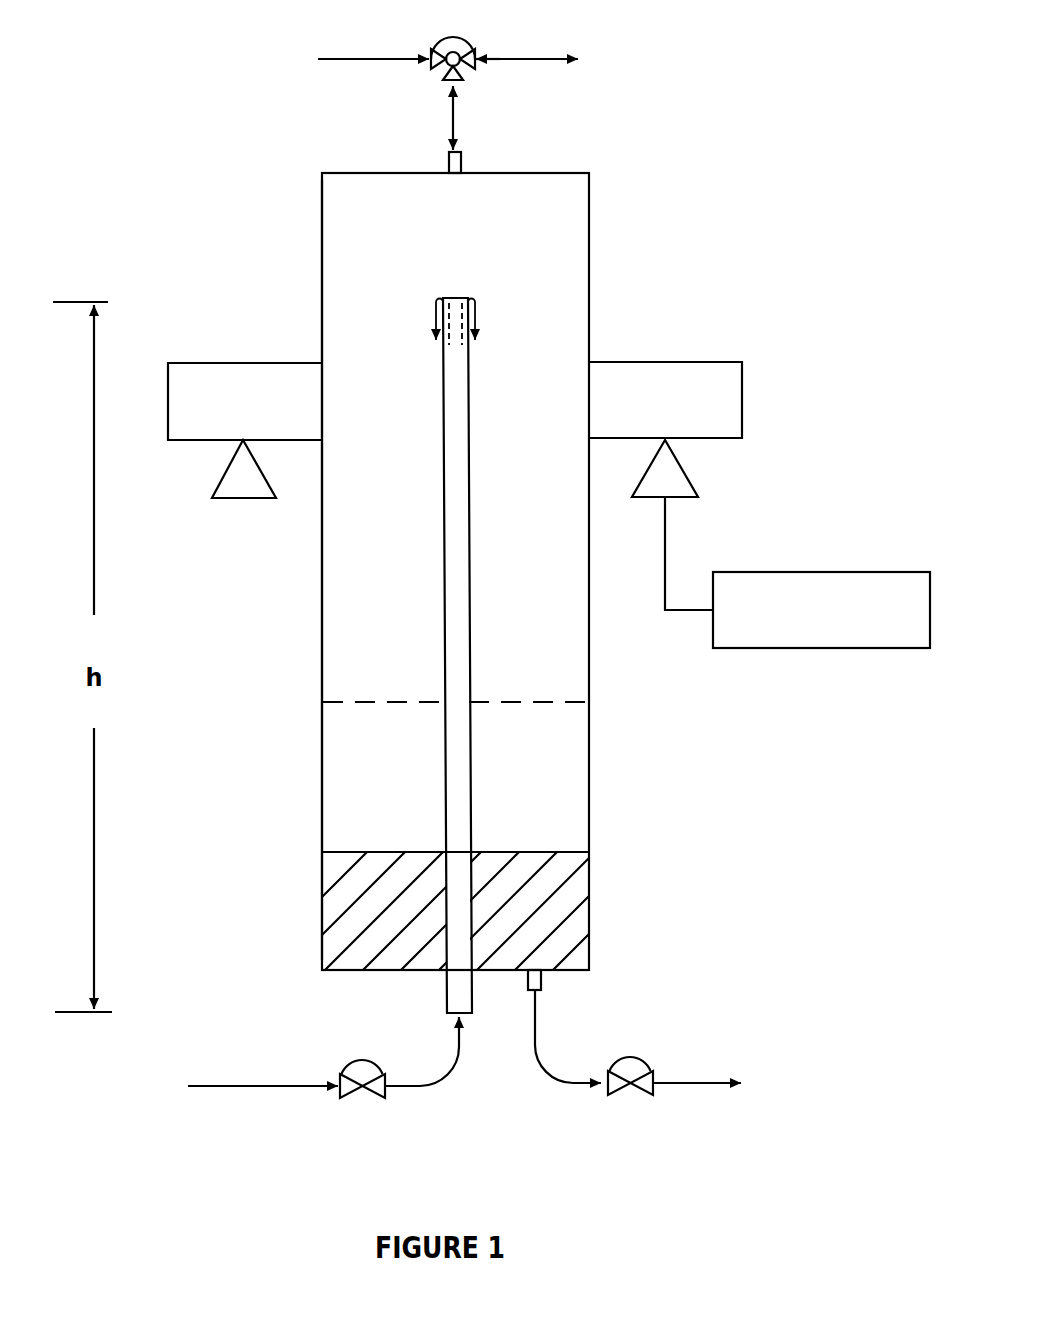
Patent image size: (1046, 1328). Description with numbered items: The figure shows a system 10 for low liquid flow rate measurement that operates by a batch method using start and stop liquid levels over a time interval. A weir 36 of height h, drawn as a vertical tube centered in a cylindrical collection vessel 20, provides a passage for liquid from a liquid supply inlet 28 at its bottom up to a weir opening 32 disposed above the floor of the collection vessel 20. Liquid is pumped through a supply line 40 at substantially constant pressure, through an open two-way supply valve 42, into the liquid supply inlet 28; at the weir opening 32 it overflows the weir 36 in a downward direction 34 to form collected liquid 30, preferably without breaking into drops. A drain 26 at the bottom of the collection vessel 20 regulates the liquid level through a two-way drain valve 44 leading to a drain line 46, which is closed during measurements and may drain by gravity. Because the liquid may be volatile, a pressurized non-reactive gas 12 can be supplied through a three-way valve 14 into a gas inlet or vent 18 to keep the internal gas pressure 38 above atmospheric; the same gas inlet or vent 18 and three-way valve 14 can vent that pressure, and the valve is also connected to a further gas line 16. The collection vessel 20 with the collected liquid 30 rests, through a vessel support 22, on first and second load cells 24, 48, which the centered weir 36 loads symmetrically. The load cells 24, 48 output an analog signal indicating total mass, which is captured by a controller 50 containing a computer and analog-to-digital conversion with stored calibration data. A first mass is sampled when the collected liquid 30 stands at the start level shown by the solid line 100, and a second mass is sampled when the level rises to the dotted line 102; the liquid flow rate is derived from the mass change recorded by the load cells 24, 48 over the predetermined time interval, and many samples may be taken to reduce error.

The system 10 is at (216, 150).
The pressurized non-reactive gas 12 is at (353, 58).
The three-way valve 14 is at (453, 33).
The gas outlet line 16 is at (536, 58).
The gas inlet or vent 18 is at (449, 163).
The collection vessel 20 is at (589, 227).
The vessel support 22 is at (722, 362).
The first load cell 24 is at (698, 478).
The drain 26 is at (541, 990).
The liquid supply inlet 28 is at (445, 1013).
The collected liquid 30 is at (335, 941).
The weir opening 32 is at (455, 297).
The downward direction 34 is at (440, 337).
The weir 36 is at (470, 460).
The internal gas pressure 38 is at (341, 261).
The supply line 40 is at (205, 1086).
The two-way supply valve 42 is at (365, 1097).
The two-way drain valve 44 is at (633, 1096).
The drain line 46 is at (710, 1083).
The second load cell 48 is at (221, 481).
The controller 50 is at (810, 572).
The solid line 100 is at (323, 852).
The dotted line 102 is at (323, 702).